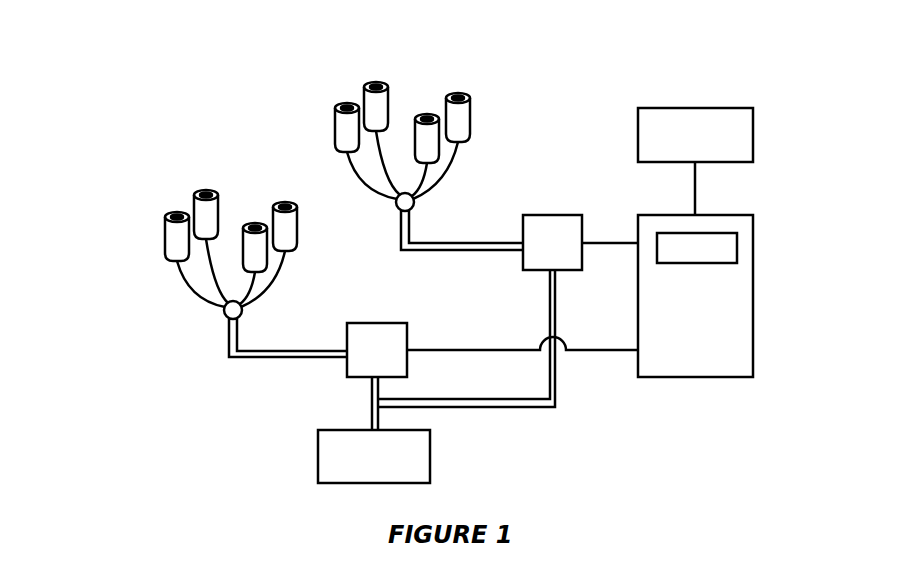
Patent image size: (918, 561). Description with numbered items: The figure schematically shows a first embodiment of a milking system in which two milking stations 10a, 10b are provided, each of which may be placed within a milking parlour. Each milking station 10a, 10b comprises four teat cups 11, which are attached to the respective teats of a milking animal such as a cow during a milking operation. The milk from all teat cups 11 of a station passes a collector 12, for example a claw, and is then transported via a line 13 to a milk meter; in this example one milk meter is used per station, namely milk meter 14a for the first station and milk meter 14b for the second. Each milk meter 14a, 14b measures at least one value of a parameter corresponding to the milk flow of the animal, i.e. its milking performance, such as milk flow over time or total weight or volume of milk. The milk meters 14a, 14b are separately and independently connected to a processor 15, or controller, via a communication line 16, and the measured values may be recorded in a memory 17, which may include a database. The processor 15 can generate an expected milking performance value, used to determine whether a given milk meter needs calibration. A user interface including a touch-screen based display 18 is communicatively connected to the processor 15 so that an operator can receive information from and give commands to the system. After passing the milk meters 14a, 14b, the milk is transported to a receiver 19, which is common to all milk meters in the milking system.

The milking station 10a is at (163, 180).
The milking station 10b is at (317, 92).
The teat cup 11 is at (165, 245).
The collector 12 is at (228, 315).
The line 13 is at (284, 351).
The milk meter 14a is at (385, 338).
The milk meter 14b is at (547, 235).
The processor 15 is at (735, 340).
The communication line 16 is at (603, 243).
The memory 17 is at (717, 250).
The touch-screen based display 18 is at (738, 128).
The receiver 19 is at (336, 452).